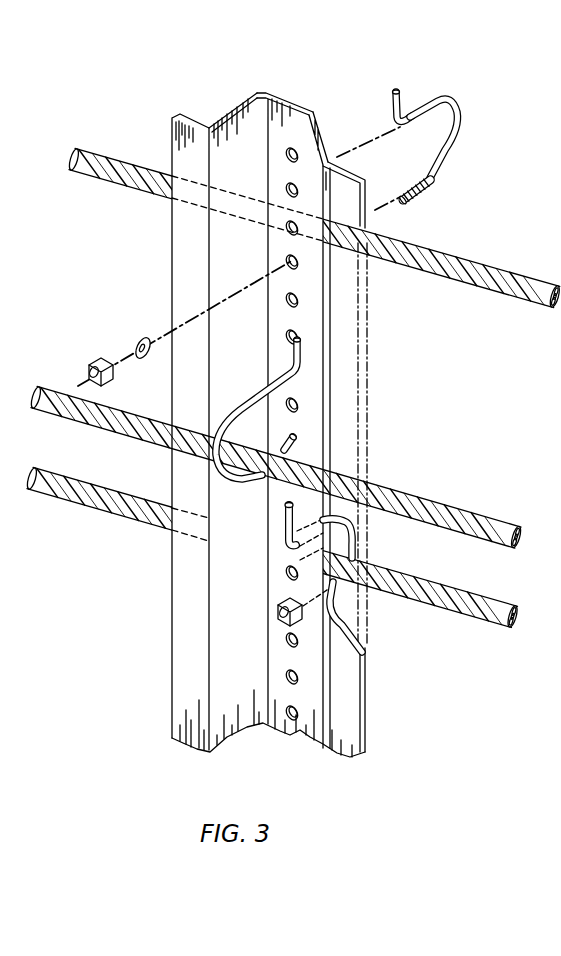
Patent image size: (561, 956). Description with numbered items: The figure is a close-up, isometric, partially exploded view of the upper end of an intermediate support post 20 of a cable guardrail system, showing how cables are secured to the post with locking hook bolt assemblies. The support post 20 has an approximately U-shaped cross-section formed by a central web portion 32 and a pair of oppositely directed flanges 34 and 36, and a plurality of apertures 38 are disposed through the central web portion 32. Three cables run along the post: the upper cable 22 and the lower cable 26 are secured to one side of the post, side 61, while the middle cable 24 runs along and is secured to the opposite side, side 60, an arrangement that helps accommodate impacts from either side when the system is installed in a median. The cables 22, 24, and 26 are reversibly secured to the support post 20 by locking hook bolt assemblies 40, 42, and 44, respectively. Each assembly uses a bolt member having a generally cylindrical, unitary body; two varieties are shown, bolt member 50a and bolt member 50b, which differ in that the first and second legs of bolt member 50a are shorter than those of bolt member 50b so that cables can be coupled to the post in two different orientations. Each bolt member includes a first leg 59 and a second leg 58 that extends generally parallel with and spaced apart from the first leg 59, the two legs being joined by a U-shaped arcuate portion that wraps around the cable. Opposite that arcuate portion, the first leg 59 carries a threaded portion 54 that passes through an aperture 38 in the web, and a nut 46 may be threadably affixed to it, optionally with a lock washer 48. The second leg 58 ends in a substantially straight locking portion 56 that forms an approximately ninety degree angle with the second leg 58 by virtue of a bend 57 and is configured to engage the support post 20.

The intermediate support post 20 is at (220, 99).
The upper cable 22 is at (533, 305).
The middle cable 24 is at (510, 523).
The lower cable 26 is at (493, 622).
The central web portion 32 is at (283, 93).
The flange 34 is at (172, 132).
The flange 36 is at (365, 685).
The apertures 38 is at (285, 155).
The locking hook bolt assembly 40 is at (470, 78).
The locking hook bolt assembly 42 is at (312, 398).
The locking hook bolt assembly 44 is at (276, 562).
The nut 46 is at (97, 360).
The lock washer 48 is at (137, 337).
The bolt member 50a is at (470, 170).
The bolt member 50b is at (215, 397).
The threaded portion 54 is at (416, 198).
The locking portion 56 is at (390, 92).
The bend 57 is at (400, 128).
The second leg 58 is at (414, 106).
The first leg 59 is at (446, 190).
The side of support post 60 is at (252, 92).
The side of support post 61 is at (302, 102).